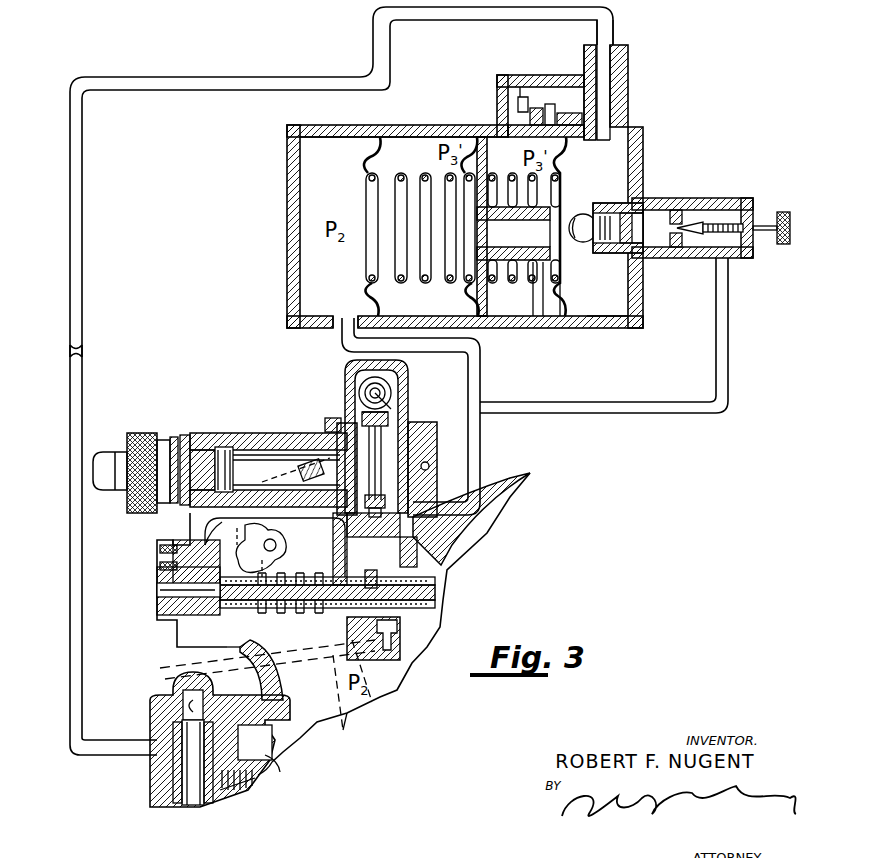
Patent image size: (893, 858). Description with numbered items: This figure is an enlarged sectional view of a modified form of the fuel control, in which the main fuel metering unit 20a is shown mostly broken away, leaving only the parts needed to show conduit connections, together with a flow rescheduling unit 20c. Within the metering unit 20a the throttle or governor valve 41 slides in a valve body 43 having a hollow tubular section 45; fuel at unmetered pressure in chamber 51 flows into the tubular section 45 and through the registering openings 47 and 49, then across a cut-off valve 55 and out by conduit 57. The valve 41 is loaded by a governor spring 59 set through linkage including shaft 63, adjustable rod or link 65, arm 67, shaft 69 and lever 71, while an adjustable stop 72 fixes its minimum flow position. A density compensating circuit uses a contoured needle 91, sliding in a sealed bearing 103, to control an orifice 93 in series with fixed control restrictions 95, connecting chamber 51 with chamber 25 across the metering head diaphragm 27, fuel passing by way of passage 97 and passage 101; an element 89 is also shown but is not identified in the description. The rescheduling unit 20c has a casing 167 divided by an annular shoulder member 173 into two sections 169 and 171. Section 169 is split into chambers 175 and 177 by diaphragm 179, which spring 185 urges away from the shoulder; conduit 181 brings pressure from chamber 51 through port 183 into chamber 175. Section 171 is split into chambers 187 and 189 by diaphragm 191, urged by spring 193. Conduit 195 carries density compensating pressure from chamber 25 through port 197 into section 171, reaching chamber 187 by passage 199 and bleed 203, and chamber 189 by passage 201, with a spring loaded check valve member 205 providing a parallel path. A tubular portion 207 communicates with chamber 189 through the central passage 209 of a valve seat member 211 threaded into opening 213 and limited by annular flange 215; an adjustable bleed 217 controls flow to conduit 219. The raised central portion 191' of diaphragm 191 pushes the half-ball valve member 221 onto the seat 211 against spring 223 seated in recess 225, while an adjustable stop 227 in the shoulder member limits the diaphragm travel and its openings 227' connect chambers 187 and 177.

The main fuel metering unit 20a is at (445, 578).
The flow rescheduling unit 20c is at (287, 200).
The chamber 25 is at (255, 743).
The metering head diaphragm 27 is at (288, 763).
The throttle or governor valve 41 is at (347, 616).
The valve body 43 is at (432, 568).
The hollow tubular section 45 is at (306, 618).
The openings 47 is at (346, 574).
The coacting openings 49 is at (386, 576).
The chamber 51 is at (310, 722).
The cut-off valve 55 is at (413, 424).
The conduit 57 is at (112, 455).
The governor spring 59 is at (262, 652).
The shaft 63 is at (392, 395).
The adjustable rod or link 65 is at (290, 478).
The arm 67 is at (240, 527).
The shaft 69 is at (276, 548).
The lever 71 is at (180, 572).
The adjustable stop 72 is at (165, 602).
The spring 89 is at (256, 782).
The contoured needle 91 is at (190, 802).
The orifice 93 is at (184, 702).
The fixed control restrictions 95 is at (282, 762).
The passage 97 is at (233, 784).
The passage 101 is at (361, 725).
The sealed bearing 103 is at (163, 780).
The casing 167 is at (460, 128).
The section 169 is at (380, 140).
The section 171 is at (588, 320).
The annular shoulder member 173 is at (488, 318).
The chamber 175 is at (314, 174).
The chamber 177 is at (416, 308).
The diaphragm 179 is at (365, 283).
The conduit 181 is at (341, 350).
The port 183 is at (335, 328).
The spring 185 is at (424, 172).
The chamber 187 is at (487, 160).
The chamber 189 is at (588, 162).
The diaphragm 191 is at (568, 319).
The raised central portion 191' is at (581, 226).
The spring 193 is at (533, 318).
The conduit 195 is at (218, 88).
The port 197 is at (614, 42).
The passage 199 is at (603, 120).
The passage 201 is at (614, 120).
The bleed 203 is at (518, 110).
The spring loaded check valve member 205 is at (612, 97).
The tubular portion 207 is at (720, 198).
The central passage 209 is at (656, 203).
The valve seat member 211 is at (658, 188).
The opening 213 is at (654, 245).
The annular flange 215 is at (642, 270).
The adjustable bleed 217 is at (696, 262).
The conduit 219 is at (706, 410).
The half-ball valve member 221 is at (586, 243).
The spring 223 is at (646, 160).
The recess 225 is at (642, 300).
The adjustable stop 227 is at (569, 327).
The openings 227' is at (513, 233).